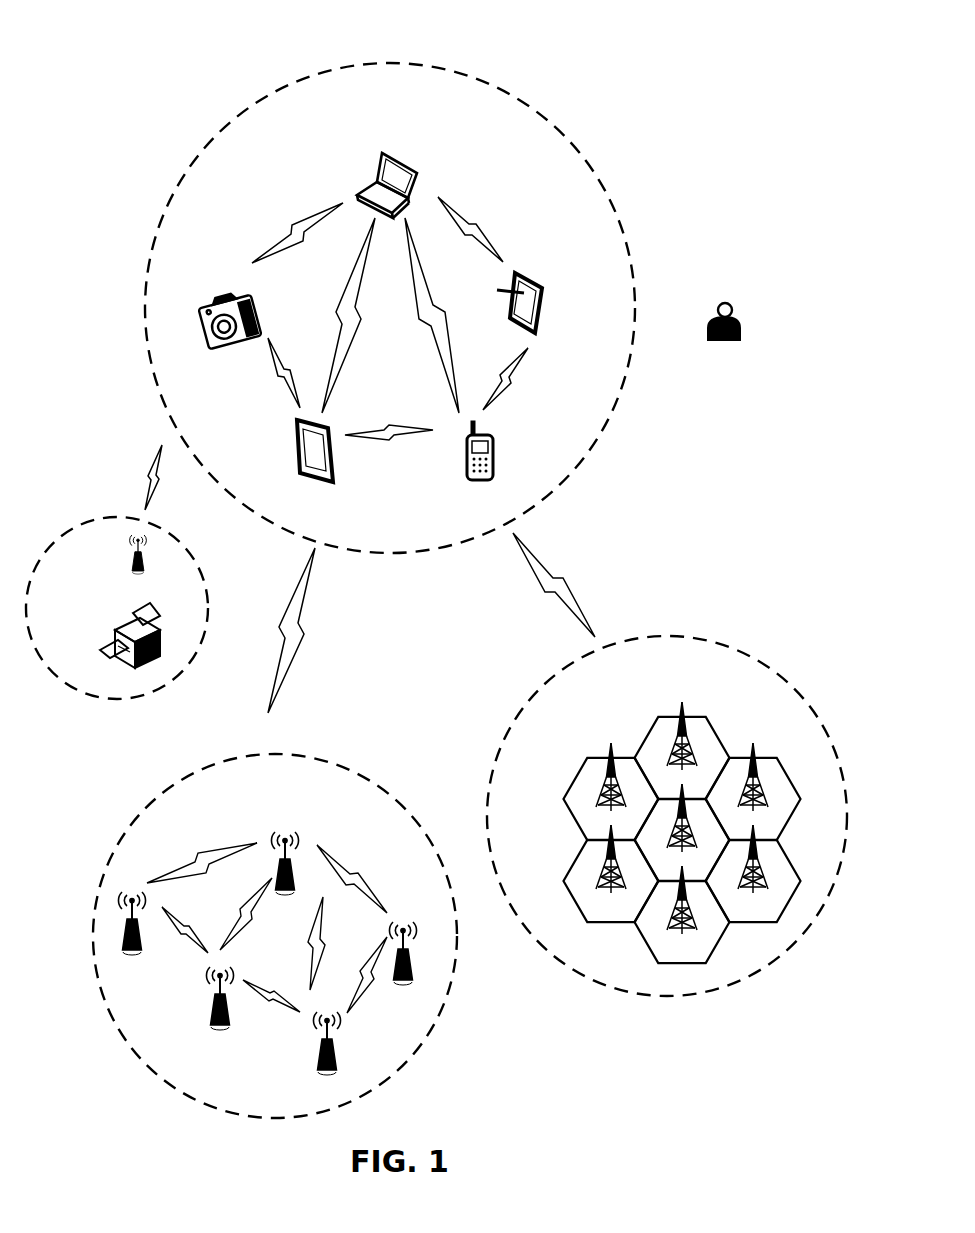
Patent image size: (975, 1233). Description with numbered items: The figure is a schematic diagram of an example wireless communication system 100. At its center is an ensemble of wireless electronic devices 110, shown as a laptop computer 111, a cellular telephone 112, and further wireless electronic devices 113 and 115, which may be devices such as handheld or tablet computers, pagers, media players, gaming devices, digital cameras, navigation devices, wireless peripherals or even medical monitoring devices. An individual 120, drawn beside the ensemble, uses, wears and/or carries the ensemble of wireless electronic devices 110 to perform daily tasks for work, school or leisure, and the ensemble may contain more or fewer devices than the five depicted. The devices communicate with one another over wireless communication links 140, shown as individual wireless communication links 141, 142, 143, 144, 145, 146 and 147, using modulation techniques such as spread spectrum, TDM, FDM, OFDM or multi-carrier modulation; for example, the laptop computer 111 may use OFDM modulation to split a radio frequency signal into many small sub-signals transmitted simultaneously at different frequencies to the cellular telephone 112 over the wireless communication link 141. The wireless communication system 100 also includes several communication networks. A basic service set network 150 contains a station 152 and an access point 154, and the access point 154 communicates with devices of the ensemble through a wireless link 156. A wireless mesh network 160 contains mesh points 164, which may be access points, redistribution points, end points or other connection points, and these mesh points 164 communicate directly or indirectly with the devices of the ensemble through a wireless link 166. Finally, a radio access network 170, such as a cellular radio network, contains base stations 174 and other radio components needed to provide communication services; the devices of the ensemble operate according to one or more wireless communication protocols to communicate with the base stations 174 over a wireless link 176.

The wireless communication system 100 is at (80, 76).
The ensemble of wireless electronic devices 110 is at (355, 308).
The laptop computer 111 is at (409, 163).
The cellular telephone 112 is at (214, 306).
The wireless electronic device 113 is at (549, 284).
The wireless electronic device 115 is at (398, 446).
The individual 120 is at (752, 304).
The wireless communication links 140 is at (278, 158).
The wireless communication link 141 is at (285, 224).
The wireless communication link 142 is at (495, 221).
The wireless communication link 143 is at (256, 373).
The wireless communication link 144 is at (337, 315).
The wireless communication link 145 is at (443, 315).
The wireless communication link 146 is at (533, 379).
The wireless communication link 147 is at (396, 448).
The basic service set network 150 is at (117, 587).
The station 152 is at (106, 632).
The access point 154 is at (104, 561).
The wireless link 156 is at (115, 468).
The wireless mesh network 160 is at (275, 917).
The mesh points 164 is at (267, 933).
The wireless link 166 is at (331, 630).
The radio access network 170 is at (667, 796).
The base stations 174 is at (682, 824).
The wireless link 176 is at (579, 579).